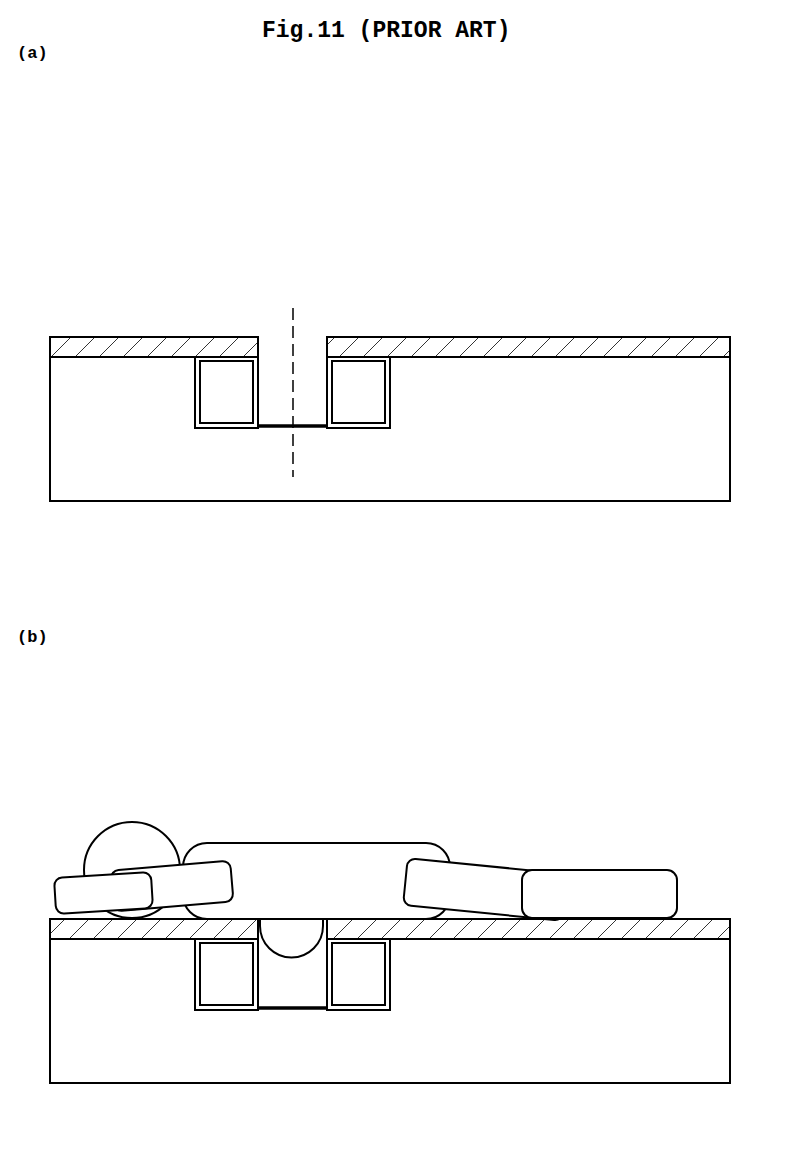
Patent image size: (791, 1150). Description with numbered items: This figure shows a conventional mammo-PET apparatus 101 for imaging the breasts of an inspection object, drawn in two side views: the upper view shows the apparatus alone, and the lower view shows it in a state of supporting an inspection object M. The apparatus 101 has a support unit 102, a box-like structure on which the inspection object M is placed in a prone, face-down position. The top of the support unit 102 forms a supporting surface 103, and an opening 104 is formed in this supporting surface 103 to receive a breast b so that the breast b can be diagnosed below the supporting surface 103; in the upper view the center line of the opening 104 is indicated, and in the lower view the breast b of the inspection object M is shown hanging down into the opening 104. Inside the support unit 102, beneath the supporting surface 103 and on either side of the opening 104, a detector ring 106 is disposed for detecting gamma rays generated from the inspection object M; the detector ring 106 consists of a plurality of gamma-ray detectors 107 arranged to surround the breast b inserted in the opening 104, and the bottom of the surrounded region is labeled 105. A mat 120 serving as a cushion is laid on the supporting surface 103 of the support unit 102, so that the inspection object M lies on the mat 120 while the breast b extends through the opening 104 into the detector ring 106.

The mammo-PET apparatus 101 is at (537, 245).
The support unit 102 is at (578, 503).
The supporting surface 103 is at (65, 355).
The opening 104 is at (307, 337).
The bottom of recess 105 is at (272, 432).
The detector ring 106 is at (392, 402).
The gamma-ray detectors 107 is at (223, 415).
The mat 120 is at (130, 355).
The breast b is at (275, 933).
The inspection object M is at (637, 880).